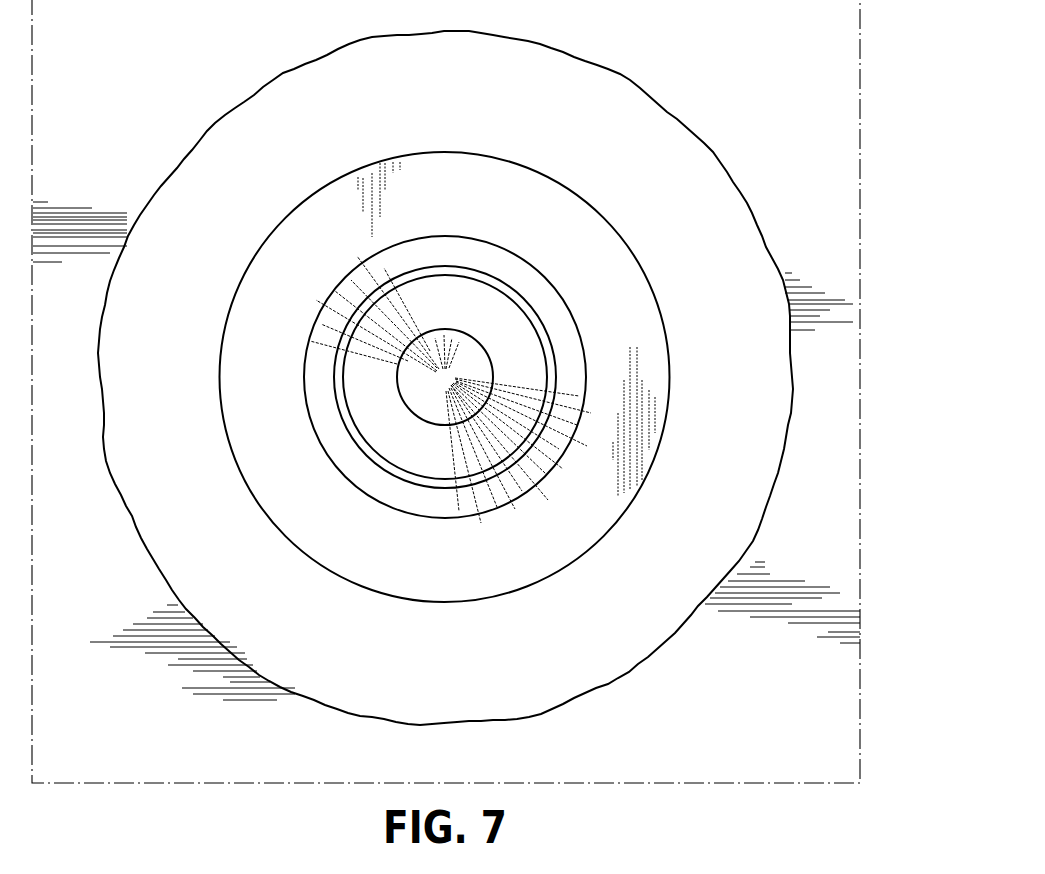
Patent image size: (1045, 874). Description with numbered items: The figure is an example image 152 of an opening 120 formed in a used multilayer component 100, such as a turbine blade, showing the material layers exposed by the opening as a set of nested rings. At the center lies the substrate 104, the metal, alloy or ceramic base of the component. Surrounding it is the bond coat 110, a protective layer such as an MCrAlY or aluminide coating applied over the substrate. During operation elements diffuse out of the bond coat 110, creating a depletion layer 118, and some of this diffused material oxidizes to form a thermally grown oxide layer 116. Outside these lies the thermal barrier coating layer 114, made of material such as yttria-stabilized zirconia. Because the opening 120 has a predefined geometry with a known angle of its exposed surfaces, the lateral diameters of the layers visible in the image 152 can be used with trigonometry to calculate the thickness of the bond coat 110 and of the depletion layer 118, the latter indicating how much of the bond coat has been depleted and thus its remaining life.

The multilayer component 100 is at (761, 119).
The substrate 104 is at (473, 367).
The bond coat 110 is at (495, 308).
The thermal barrier coating layer 114 is at (745, 453).
The thermally grown oxide layer 116 is at (495, 263).
The depletion layer 118 is at (547, 353).
The opening 120 is at (543, 495).
The image 152 is at (571, 759).